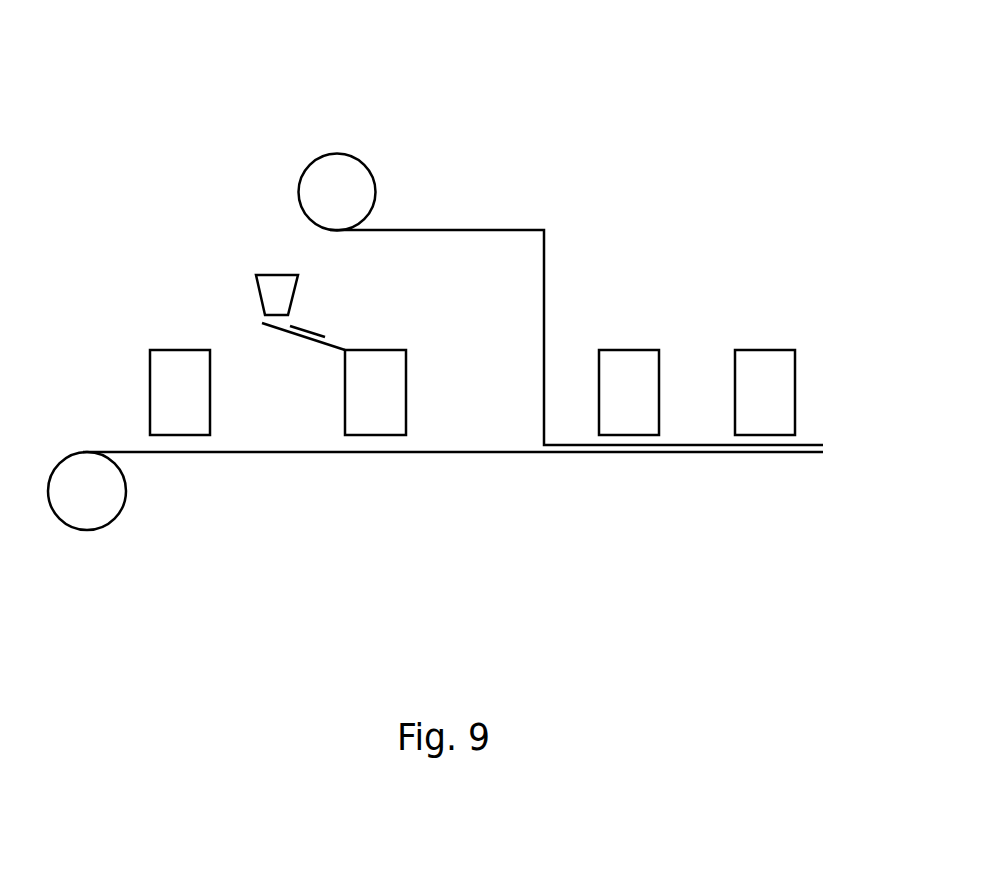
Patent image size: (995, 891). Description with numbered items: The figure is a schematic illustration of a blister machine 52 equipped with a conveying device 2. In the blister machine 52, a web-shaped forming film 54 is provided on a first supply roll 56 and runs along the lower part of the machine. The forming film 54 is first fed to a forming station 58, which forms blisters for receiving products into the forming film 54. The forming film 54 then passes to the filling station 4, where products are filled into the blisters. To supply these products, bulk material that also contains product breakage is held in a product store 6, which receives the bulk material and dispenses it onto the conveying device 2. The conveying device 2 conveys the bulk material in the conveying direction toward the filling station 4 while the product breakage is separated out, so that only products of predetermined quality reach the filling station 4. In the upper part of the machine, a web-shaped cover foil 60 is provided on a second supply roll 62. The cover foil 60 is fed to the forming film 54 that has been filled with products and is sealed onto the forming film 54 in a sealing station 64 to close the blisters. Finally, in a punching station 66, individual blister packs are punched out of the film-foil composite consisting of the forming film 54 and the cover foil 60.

The blister machine 52 is at (719, 88).
The web-shaped forming film 54 is at (303, 453).
The first supply roll 56 is at (107, 498).
The forming station 58 is at (170, 362).
The product store 6 is at (270, 282).
The conveying device 2 is at (334, 318).
The filling station 4 is at (383, 363).
The second supply roll 62 is at (340, 177).
The web-shaped cover foil 60 is at (480, 230).
The sealing station 64 is at (623, 353).
The punching station 66 is at (756, 362).